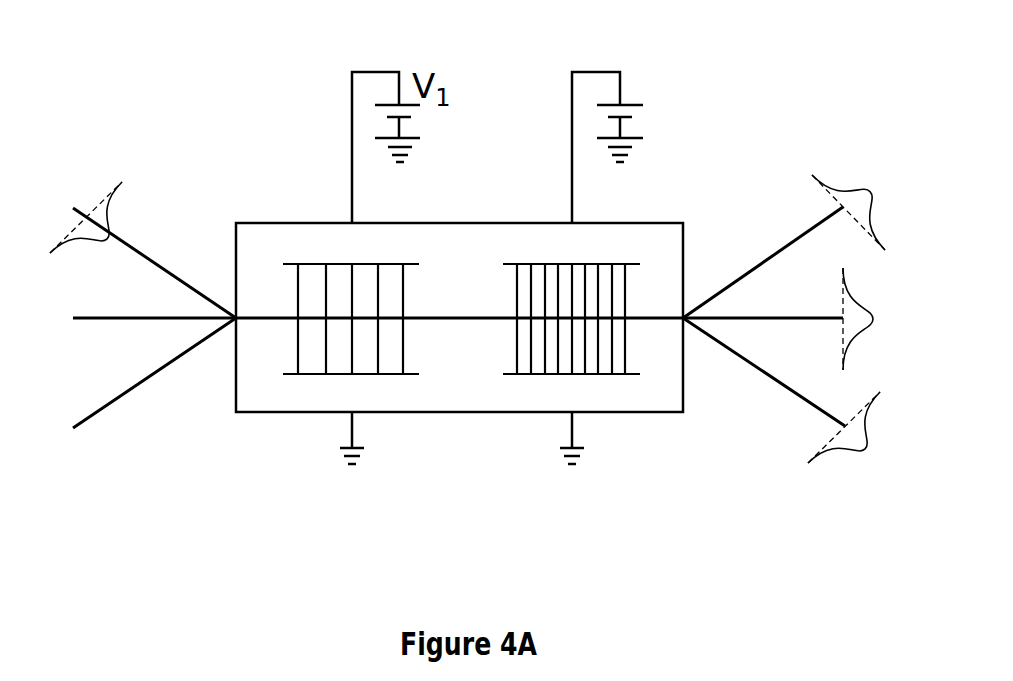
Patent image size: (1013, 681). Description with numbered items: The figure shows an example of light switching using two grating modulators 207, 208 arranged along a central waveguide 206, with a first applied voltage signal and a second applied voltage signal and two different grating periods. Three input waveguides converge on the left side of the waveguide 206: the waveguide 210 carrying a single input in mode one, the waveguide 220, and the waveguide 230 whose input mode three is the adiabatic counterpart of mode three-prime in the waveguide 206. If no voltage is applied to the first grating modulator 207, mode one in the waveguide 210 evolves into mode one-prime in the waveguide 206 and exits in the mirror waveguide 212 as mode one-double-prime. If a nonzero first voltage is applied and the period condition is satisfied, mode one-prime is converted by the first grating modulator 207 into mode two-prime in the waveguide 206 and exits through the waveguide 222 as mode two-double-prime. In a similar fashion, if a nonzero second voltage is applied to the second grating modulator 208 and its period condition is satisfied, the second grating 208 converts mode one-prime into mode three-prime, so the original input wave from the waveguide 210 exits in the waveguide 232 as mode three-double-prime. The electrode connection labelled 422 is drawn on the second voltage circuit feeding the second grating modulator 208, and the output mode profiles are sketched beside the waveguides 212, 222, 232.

The waveguide 206 is at (287, 222).
The first grating modulator 207 is at (334, 263).
The second grating modulator 208 is at (545, 263).
The waveguide 210 is at (120, 237).
The input beam (2") 220 is at (147, 316).
The waveguide 230 is at (138, 381).
The mirror waveguide 212 is at (794, 241).
The waveguide 222 is at (785, 314).
The waveguide 232 is at (800, 398).
The voltage source V2 electrode circuit 422 is at (612, 70).